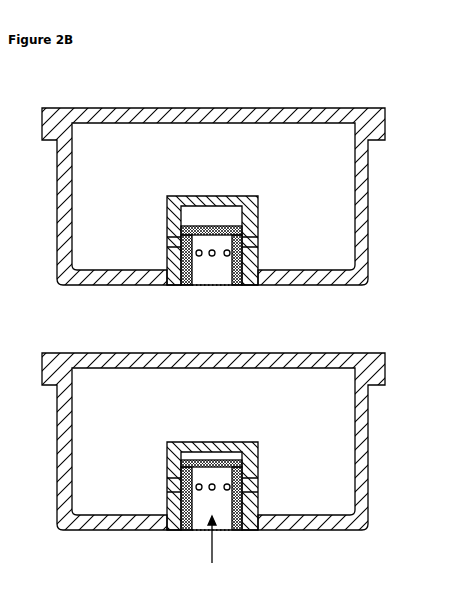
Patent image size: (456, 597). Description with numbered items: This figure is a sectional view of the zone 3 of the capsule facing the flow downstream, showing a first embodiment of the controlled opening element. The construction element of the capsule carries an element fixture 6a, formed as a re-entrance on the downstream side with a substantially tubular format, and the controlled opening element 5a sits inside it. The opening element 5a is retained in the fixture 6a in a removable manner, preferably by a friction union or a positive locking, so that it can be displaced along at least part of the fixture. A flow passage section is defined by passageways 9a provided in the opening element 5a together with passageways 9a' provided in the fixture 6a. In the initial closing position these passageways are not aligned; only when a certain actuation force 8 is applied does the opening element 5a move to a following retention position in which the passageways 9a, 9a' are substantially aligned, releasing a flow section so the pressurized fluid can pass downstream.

The zone of capsule facing the flow downstream 3 is at (201, 306).
The element fixture 6a is at (224, 363).
The passageways of the element fixture 9a' is at (189, 357).
The passageways of the controlled opening element 9a is at (211, 382).
The controlled opening element 5a is at (214, 409).
The actuation force 8 is at (220, 539).